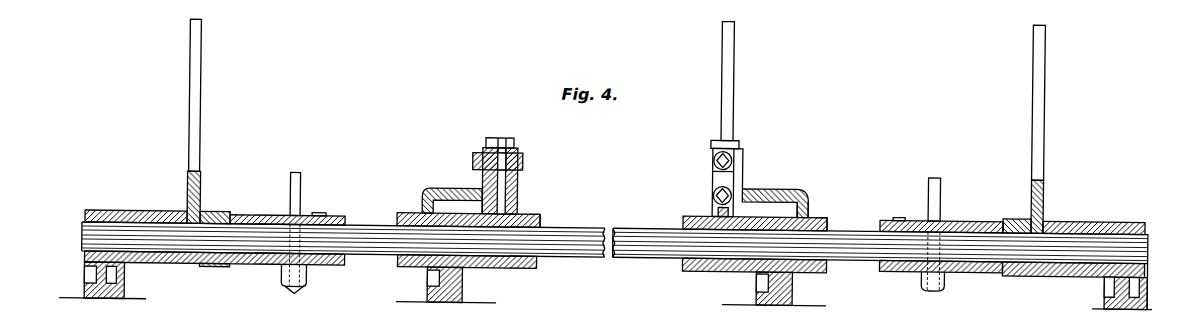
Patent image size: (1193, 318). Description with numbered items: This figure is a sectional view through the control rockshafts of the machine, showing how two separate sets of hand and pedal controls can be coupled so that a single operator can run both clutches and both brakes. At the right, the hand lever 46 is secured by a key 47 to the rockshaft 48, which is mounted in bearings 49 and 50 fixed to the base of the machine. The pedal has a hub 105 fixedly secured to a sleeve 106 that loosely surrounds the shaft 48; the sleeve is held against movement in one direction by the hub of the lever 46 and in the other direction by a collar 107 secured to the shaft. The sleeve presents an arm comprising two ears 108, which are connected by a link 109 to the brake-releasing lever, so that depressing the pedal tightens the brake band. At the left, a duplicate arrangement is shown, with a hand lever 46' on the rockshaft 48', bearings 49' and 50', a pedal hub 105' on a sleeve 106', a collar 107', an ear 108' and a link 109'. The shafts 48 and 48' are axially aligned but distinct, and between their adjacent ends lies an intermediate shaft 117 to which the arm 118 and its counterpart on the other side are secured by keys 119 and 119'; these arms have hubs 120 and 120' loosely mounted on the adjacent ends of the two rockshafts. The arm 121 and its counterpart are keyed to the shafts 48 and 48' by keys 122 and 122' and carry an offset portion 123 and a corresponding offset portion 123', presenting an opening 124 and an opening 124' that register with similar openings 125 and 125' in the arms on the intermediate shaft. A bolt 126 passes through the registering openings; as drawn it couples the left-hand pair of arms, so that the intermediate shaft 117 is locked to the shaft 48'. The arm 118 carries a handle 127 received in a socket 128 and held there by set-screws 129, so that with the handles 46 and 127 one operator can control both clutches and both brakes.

The hand lever 46' is at (213, 121).
The rockshaft 48' is at (331, 232).
The hub 105' is at (272, 225).
The bearing 49' is at (109, 280).
The sleeve 106' is at (214, 250).
The ear 108' is at (297, 266).
The link 109' is at (319, 191).
The collar 107' is at (329, 201).
The key 122' is at (449, 210).
The arm 121 is at (430, 193).
The bolt 126 is at (473, 160).
The opening 124' is at (476, 147).
The opening 125' is at (524, 139).
The offset portion 123' is at (459, 182).
The arm 118 is at (517, 190).
The socket 128 is at (483, 201).
The key 119' is at (556, 213).
The bearing 50' is at (446, 285).
The hub 120' is at (466, 273).
The handle 127 is at (720, 52).
The set-screws 129 is at (716, 150).
The opening 125 is at (701, 163).
The opening 124 is at (762, 169).
The offset portion 123 is at (775, 194).
The key 119 is at (735, 216).
The key 122 is at (844, 216).
The intermediate shaft 117 is at (641, 239).
The hub 120 is at (754, 278).
The bearing 50 is at (775, 289).
The rockshaft 48 is at (897, 257).
The link 109 is at (916, 196).
The collar 107 is at (896, 206).
The sleeve 106 is at (941, 234).
The hub 105 is at (1068, 234).
The key 47 is at (1046, 214).
The hand lever 46 is at (1057, 103).
The bearing 49 is at (1134, 286).
The ears 108 is at (937, 271).